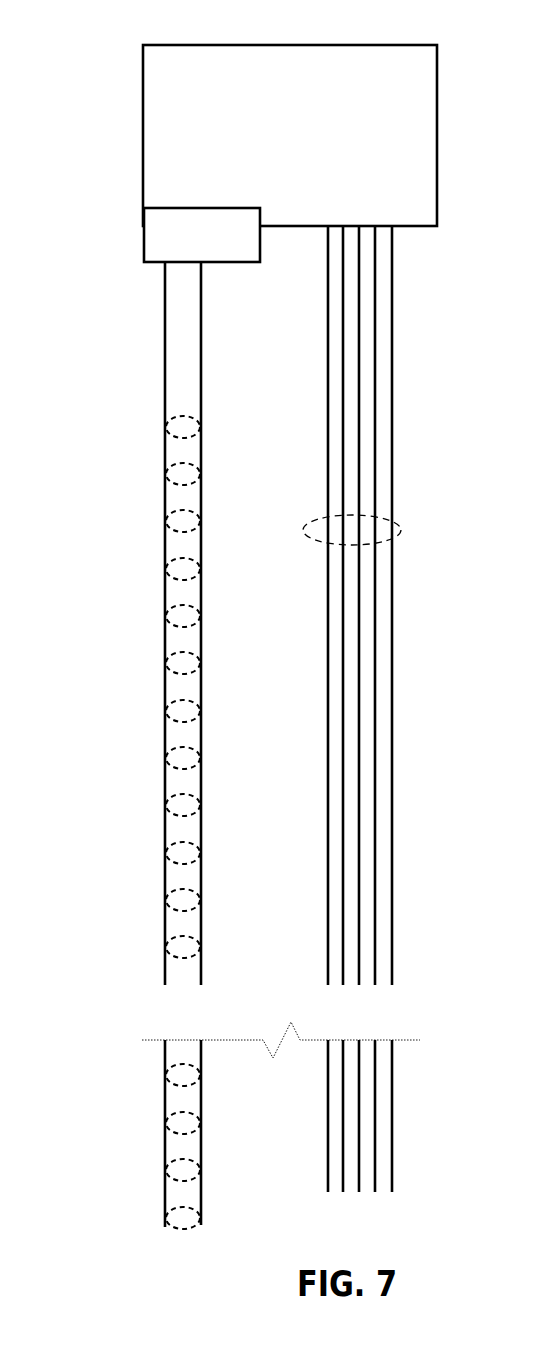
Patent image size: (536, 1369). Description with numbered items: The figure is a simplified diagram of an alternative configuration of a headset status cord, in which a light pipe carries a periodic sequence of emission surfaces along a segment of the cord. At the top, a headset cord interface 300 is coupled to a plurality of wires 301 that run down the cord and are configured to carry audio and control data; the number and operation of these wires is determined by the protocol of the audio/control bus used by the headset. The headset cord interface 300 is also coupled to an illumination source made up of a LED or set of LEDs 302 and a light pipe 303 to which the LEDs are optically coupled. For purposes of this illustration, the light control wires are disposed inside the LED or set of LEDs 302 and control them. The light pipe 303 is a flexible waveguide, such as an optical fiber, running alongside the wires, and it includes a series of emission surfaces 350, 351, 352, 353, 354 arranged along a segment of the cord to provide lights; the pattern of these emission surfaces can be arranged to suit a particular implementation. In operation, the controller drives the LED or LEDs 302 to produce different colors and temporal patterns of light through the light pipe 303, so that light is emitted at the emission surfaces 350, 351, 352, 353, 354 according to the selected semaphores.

The headset cord interface 300 is at (257, 65).
The plurality of wires 301 is at (398, 528).
The LED or set of LEDs 302 is at (147, 242).
The light pipe 303 is at (182, 363).
The emission surface 350 is at (170, 474).
The emission surface 351 is at (172, 520).
The emission surface 352 is at (172, 706).
The emission surface 353 is at (165, 806).
The emission surface 354 is at (172, 1116).